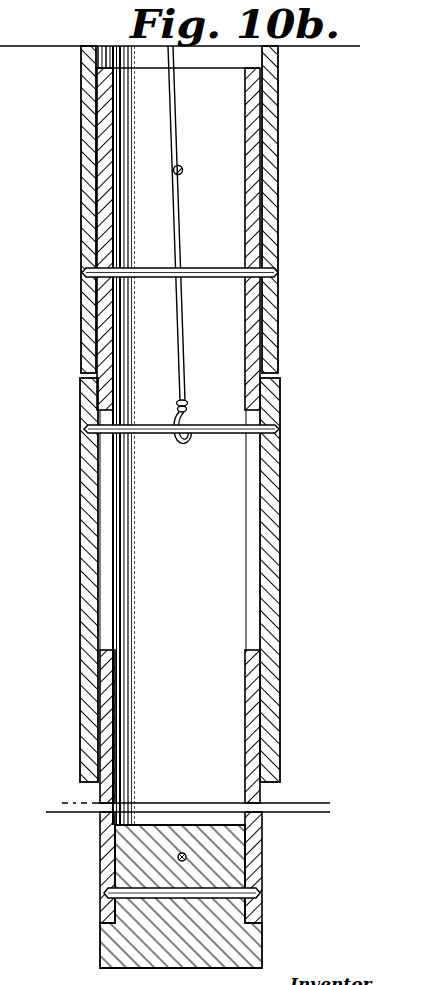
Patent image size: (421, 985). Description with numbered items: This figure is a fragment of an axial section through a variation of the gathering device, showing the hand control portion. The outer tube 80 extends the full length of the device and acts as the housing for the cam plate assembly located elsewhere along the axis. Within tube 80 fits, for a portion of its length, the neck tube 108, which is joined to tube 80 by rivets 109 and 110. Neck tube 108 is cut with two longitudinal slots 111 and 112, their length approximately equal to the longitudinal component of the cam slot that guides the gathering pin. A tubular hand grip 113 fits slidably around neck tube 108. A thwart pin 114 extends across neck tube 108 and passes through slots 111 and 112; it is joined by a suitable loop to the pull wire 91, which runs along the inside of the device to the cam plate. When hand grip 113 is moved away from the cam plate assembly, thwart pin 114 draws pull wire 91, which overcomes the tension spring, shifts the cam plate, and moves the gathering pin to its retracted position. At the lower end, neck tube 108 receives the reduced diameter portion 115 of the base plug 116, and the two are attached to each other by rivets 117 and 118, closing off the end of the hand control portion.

The tube 80 is at (81, 173).
The pull wire 91 is at (170, 227).
The neck tube 108 is at (253, 137).
The rivet 109 is at (185, 171).
The rivet 110 is at (223, 270).
The longitudinal slot 111 is at (110, 503).
The longitudinal slot 112 is at (252, 488).
The hand grip 113 is at (92, 401).
The thwart pin 114 is at (147, 435).
The reduced diameter portion 115 is at (120, 868).
The base plug 116 is at (157, 940).
The rivet 117 is at (262, 890).
The rivet 118 is at (187, 858).